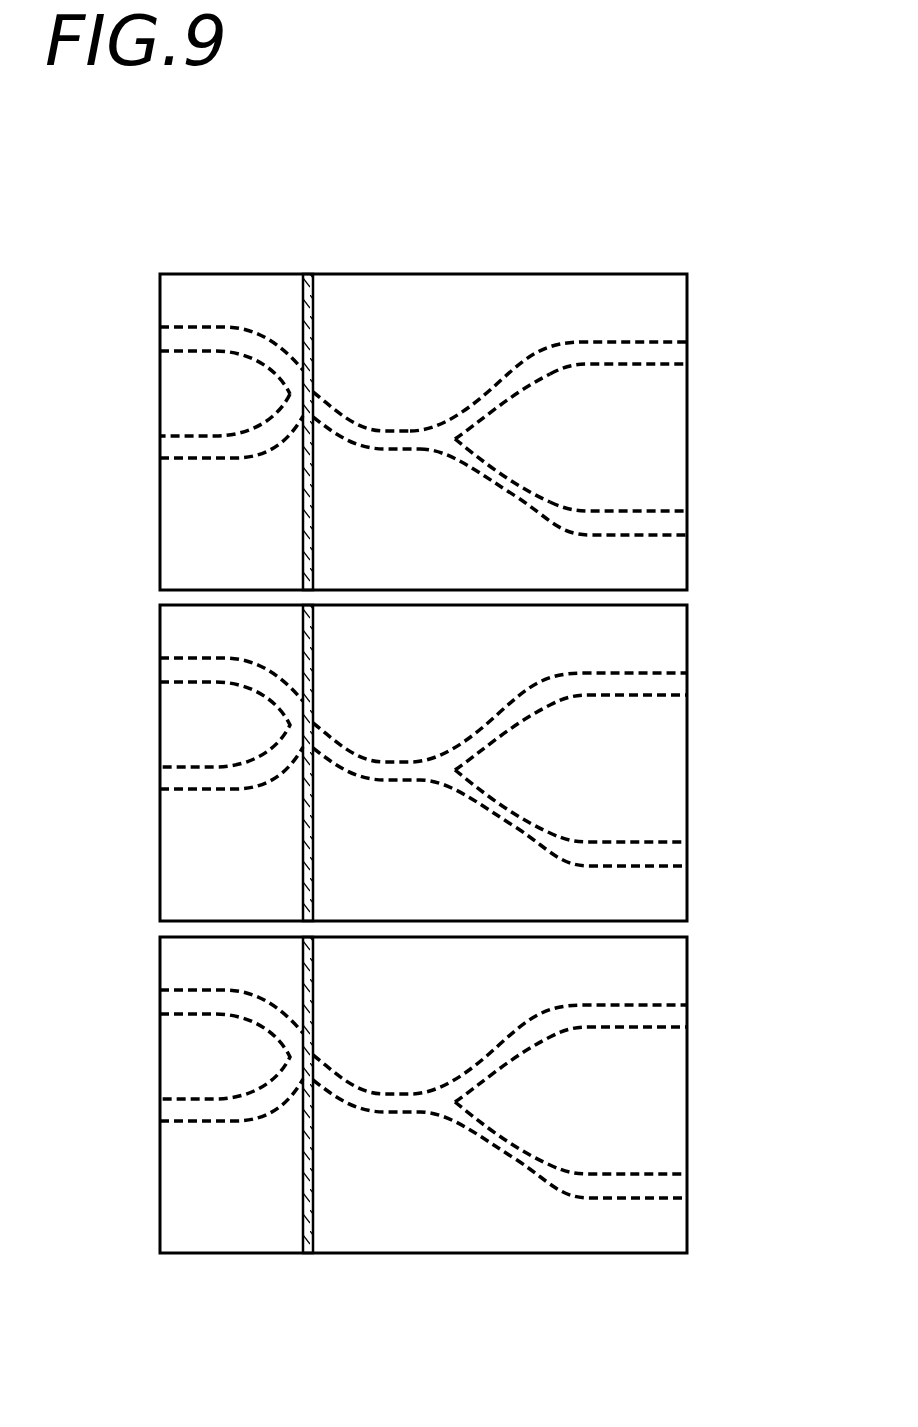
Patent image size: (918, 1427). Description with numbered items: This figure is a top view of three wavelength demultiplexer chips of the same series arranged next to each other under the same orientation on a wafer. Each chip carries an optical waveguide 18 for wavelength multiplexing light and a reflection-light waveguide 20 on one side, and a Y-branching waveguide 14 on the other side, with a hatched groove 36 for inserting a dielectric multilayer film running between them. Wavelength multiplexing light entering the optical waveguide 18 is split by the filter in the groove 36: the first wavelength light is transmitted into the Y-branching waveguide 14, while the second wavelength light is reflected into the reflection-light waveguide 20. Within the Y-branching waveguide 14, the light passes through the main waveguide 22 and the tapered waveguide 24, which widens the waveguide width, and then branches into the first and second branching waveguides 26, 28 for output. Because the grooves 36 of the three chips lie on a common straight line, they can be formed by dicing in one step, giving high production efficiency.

The Y-branching waveguide 14 is at (575, 329).
The optical waveguide for wavelength multiplexing light 18 is at (177, 315).
The reflection-light waveguide 20 is at (180, 474).
The main waveguide 22 is at (382, 327).
The tapered waveguide 24 is at (495, 353).
The first branching waveguide 26 is at (548, 318).
The second branching waveguide 28 is at (621, 367).
The groove 36 is at (246, 389).